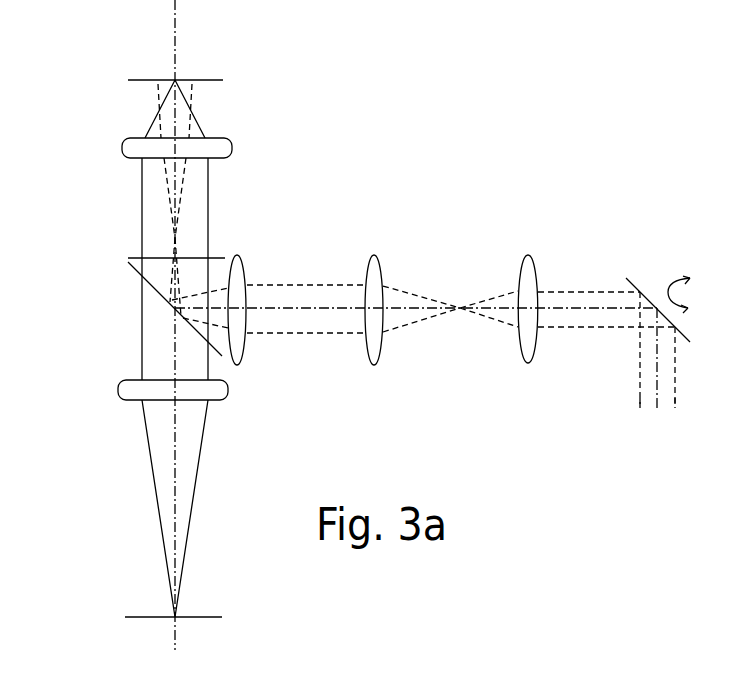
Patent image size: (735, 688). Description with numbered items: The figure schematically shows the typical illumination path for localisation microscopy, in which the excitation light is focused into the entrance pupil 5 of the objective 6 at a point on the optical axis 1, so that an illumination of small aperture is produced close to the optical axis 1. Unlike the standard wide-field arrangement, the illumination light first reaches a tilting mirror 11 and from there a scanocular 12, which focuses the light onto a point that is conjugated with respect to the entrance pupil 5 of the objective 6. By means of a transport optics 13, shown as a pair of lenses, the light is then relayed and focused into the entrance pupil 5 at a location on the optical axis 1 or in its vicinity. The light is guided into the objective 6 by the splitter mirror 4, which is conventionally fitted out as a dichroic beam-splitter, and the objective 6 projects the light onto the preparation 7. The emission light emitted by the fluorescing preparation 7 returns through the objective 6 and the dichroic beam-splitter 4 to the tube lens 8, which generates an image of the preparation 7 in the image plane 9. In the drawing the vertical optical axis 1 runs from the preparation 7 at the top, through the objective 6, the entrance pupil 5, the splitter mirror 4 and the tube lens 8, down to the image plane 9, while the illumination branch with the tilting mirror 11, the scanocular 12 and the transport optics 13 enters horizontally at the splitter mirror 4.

The optical axis 1 is at (652, 410).
The splitter mirror 4 is at (132, 267).
The entrance pupil 5 is at (133, 258).
The objective 6 is at (122, 148).
The preparation 7 is at (143, 80).
The tube lens 8 is at (118, 390).
The image plane 9 is at (150, 617).
The tilting mirror 11 is at (634, 284).
The scanocular 12 is at (539, 270).
The transport optics 13 is at (392, 238).